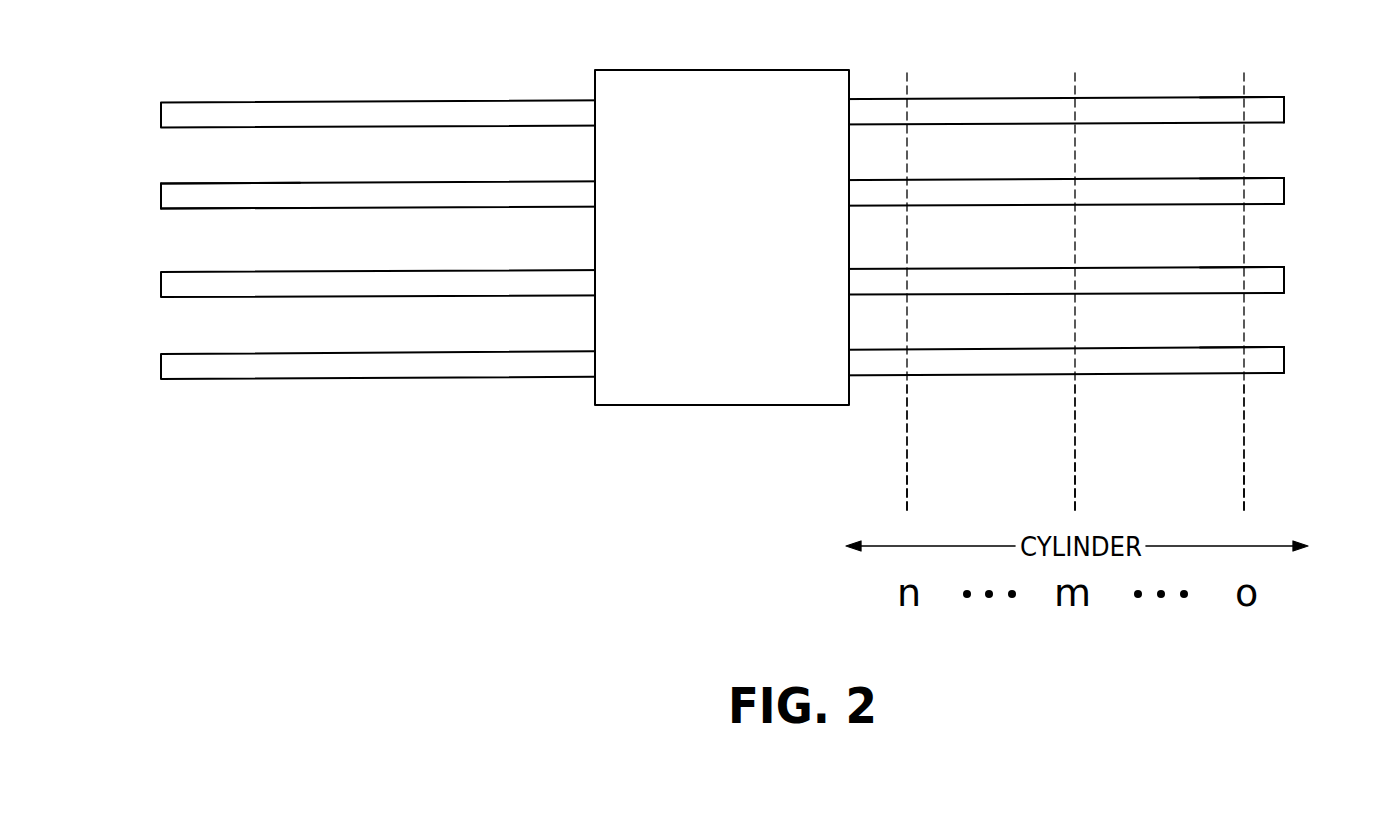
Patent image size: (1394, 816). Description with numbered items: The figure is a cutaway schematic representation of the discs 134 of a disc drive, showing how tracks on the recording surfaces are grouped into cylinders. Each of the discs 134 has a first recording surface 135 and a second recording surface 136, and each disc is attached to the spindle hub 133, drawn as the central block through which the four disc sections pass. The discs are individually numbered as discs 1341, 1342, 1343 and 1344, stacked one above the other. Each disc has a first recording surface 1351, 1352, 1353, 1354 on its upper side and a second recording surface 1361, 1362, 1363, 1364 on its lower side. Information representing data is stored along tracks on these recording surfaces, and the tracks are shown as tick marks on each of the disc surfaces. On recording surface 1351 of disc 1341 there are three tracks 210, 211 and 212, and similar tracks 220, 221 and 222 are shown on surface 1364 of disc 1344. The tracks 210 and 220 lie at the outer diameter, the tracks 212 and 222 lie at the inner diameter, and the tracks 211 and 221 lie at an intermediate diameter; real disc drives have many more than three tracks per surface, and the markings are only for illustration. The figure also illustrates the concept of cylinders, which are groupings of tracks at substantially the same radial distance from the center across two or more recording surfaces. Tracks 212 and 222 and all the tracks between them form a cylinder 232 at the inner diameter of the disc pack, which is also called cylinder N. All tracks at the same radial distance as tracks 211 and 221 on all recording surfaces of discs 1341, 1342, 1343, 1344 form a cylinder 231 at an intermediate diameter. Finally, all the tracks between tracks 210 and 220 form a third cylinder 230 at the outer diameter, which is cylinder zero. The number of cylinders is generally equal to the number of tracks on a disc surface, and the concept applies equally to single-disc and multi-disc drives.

The spindle hub 133 is at (827, 55).
The discs 134 is at (160, 196).
The first recording surface 135 is at (182, 182).
The second recording surface 136 is at (182, 210).
The second recording surface of first disc 1361 is at (233, 129).
The second recording surface of second disc 1362 is at (233, 210).
The second recording surface of third disc 1363 is at (233, 298).
The second recording surface of fourth disc 1364 is at (1266, 373).
The first disc 1341 is at (1285, 110).
The second disc 1342 is at (1285, 191).
The third disc 1343 is at (1285, 280).
The fourth disc 1344 is at (1285, 360).
The first recording surface of first disc 1351 is at (1268, 96).
The first recording surface of second disc 1352 is at (1268, 177).
The first recording surface of third disc 1353 is at (1268, 266).
The first recording surface of fourth disc 1354 is at (1268, 346).
The outer diameter track 210 is at (1268, 56).
The intermediate diameter track 211 is at (1075, 73).
The inner diameter track 212 is at (907, 73).
The outer diameter track 220 is at (1245, 396).
The intermediate diameter track 221 is at (1076, 396).
The inner diameter track 222 is at (908, 396).
The outer diameter cylinder 230 is at (1245, 471).
The intermediate diameter cylinder 231 is at (1076, 471).
The inner diameter cylinder 232 is at (908, 471).